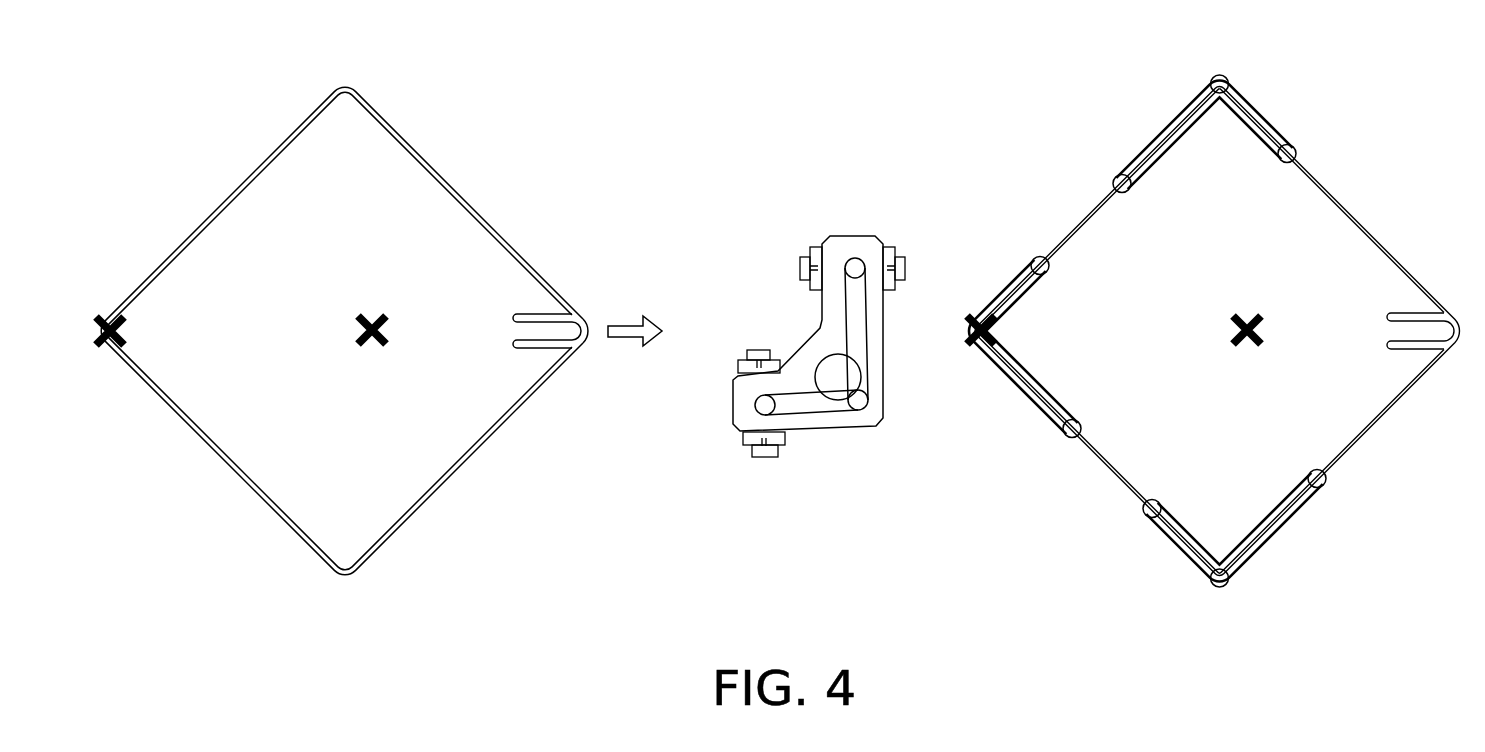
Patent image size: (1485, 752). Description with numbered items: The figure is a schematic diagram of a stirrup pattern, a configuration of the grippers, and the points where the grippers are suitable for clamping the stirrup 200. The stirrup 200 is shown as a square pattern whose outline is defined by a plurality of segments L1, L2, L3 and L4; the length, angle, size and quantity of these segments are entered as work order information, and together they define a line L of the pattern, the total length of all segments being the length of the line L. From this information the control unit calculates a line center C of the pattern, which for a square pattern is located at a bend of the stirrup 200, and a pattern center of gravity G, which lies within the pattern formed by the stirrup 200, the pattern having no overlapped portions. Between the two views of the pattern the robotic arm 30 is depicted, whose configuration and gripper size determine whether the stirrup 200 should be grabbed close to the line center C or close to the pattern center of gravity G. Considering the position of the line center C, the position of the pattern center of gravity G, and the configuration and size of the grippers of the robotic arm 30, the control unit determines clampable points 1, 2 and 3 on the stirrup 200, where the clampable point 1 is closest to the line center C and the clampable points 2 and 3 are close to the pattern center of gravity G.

The stirrup 200 is at (777, 322).
The robotic arm 30 is at (852, 250).
The clampable point 1 is at (1025, 347).
The clampable point 2 is at (1234, 529).
The clampable point 3 is at (1204, 134).
The line center C is at (561, 329).
The pattern center of gravity G is at (809, 351).
The line L is at (600, 473).
The segment L1 is at (430, 496).
The segment L2 is at (218, 454).
The segment L3 is at (220, 206).
The segment L4 is at (413, 149).